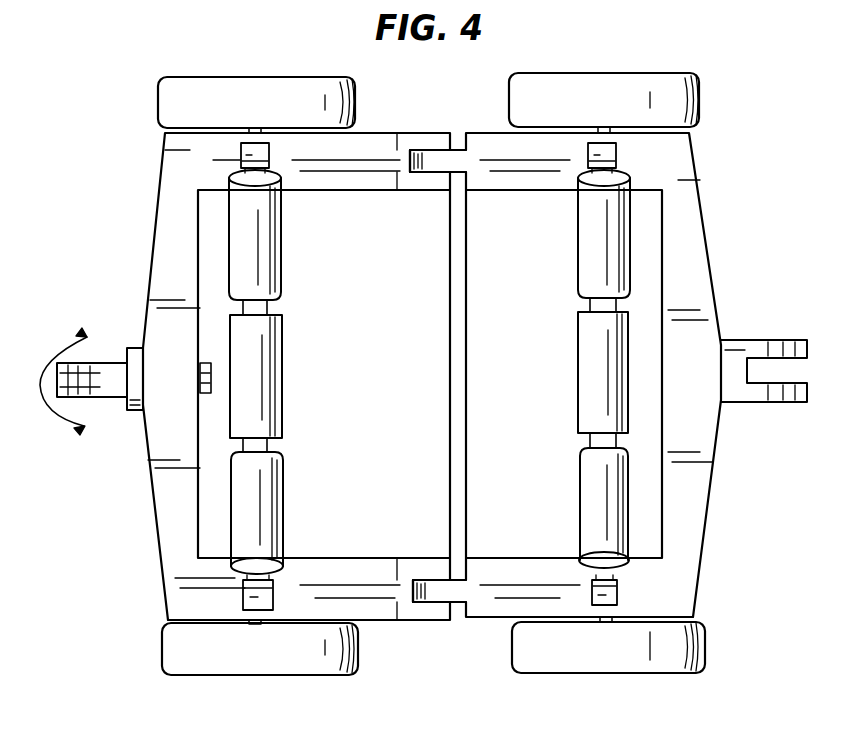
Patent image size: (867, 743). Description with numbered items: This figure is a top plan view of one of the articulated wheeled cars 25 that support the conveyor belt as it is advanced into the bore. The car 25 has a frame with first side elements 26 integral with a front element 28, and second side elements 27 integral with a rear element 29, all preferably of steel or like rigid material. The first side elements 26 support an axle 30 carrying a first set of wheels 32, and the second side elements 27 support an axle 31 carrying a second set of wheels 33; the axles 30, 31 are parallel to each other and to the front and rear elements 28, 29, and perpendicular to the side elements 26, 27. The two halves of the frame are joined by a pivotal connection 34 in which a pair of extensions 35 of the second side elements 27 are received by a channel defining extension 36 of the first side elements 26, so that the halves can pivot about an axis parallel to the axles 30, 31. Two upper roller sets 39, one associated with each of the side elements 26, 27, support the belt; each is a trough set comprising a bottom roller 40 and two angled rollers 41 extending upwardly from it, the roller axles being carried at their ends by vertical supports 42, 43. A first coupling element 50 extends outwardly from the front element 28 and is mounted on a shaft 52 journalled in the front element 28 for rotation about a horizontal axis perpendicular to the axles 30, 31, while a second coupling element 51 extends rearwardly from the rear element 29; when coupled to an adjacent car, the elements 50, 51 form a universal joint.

The wheeled car 25 is at (118, 212).
The first side elements 26 is at (333, 180).
The second side elements 27 is at (530, 182).
The front element 28 is at (152, 280).
The rear element 29 is at (692, 252).
The axle 30 is at (252, 626).
The axle 31 is at (608, 618).
The first set of wheels 32 is at (248, 88).
The second set of wheels 33 is at (628, 82).
The pivotal connection means 34 is at (424, 197).
The extensions 35 is at (430, 148).
The channel defining extension 36 is at (447, 180).
The first set of rollers 39 is at (450, 375).
The bottom roller 40 is at (288, 366).
The angled rollers 41 is at (265, 250).
The vertical support 42 is at (270, 157).
The vertical support 43 is at (267, 310).
The first coupling element 50 is at (105, 392).
The second coupling element 51 is at (735, 393).
The shaft 52 is at (208, 364).